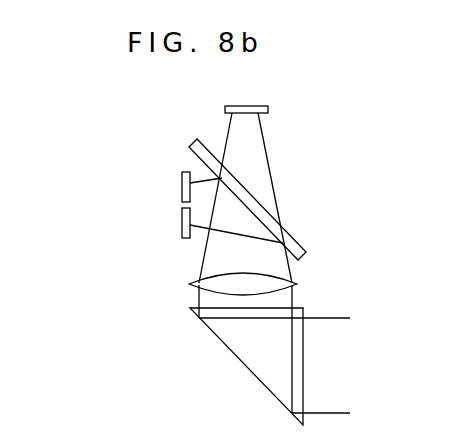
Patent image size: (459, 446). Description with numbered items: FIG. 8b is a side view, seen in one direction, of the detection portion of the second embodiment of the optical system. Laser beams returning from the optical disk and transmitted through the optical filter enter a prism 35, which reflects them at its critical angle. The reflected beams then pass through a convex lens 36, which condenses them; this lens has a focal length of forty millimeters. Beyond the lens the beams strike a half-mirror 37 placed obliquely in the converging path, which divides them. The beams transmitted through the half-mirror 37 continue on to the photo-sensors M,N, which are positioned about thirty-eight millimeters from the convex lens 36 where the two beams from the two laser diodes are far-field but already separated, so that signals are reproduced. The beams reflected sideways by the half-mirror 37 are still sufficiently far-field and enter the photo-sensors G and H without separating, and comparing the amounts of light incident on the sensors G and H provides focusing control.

The prism 35 is at (217, 340).
The convex lens 36 is at (193, 282).
The half-mirror 37 is at (303, 238).
The photo-sensor G is at (182, 193).
The photo-sensor H is at (155, 202).
The photo-sensors M,N is at (302, 103).